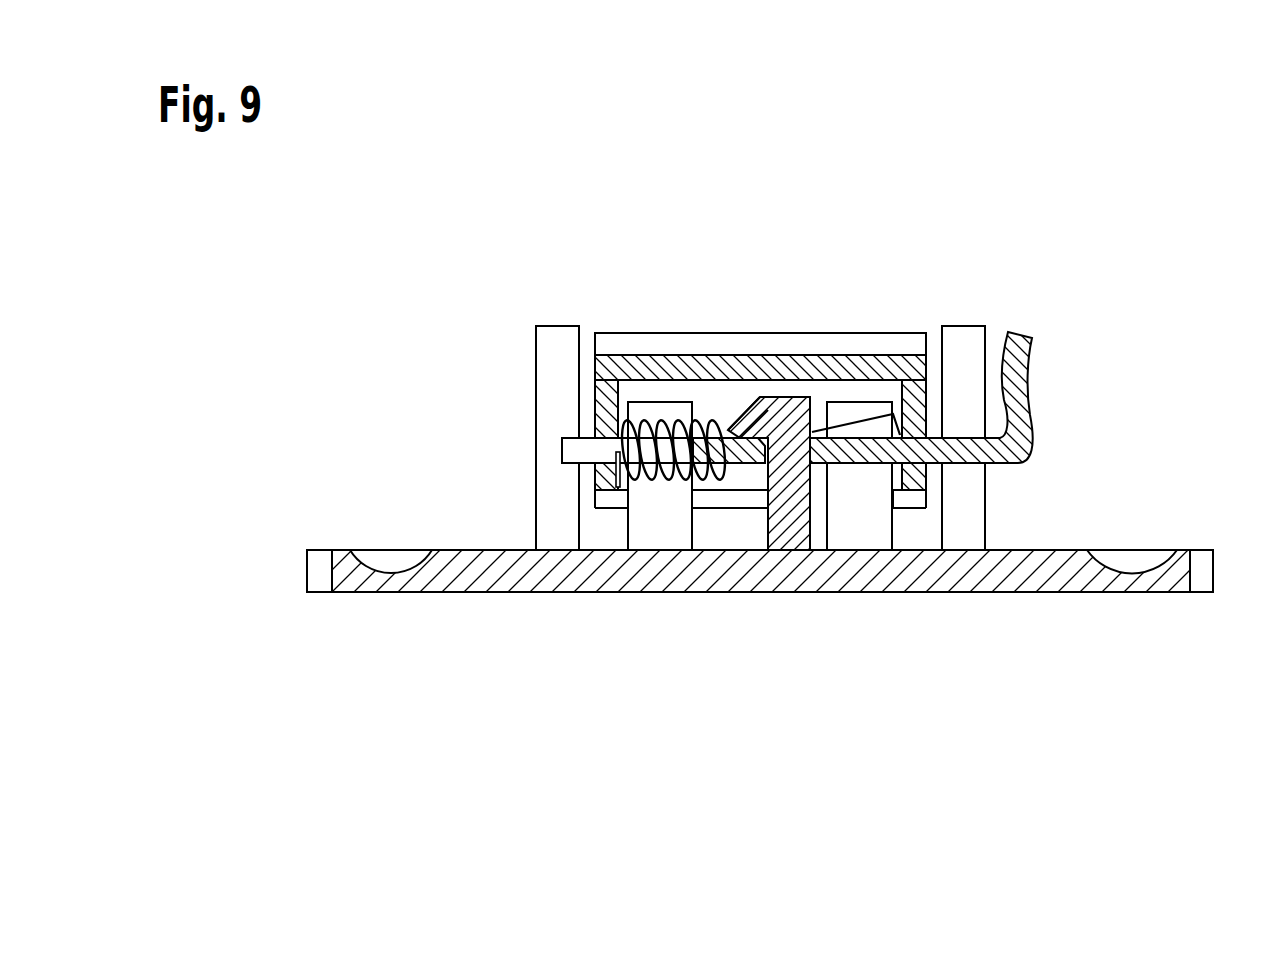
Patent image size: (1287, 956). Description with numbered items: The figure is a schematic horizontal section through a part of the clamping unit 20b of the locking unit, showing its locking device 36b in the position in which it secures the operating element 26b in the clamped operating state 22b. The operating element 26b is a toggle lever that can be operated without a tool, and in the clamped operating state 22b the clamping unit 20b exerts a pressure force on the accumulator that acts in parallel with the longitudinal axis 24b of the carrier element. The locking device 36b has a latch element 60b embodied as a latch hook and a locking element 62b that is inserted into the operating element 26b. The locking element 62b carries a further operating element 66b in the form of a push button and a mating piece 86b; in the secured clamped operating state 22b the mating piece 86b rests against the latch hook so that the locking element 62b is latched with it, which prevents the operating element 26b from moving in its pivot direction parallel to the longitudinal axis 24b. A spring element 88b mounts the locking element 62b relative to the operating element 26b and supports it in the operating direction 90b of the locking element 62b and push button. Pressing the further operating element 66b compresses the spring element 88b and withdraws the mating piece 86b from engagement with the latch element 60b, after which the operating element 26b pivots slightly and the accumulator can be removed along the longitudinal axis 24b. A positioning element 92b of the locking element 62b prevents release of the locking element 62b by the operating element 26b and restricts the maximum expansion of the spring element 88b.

The clamping unit 20b is at (1135, 437).
The clamped operating state 22b is at (1097, 302).
The longitudinal axis 24b is at (750, 205).
The operating element 26b is at (656, 368).
The locking device 36b is at (706, 407).
The latch element 60b is at (753, 411).
The locking element 62b is at (648, 550).
The further operating element 66b is at (1015, 385).
The mating piece 86b is at (735, 450).
The spring element 88b is at (650, 488).
The operating direction 90b is at (558, 452).
The positioning element 92b is at (868, 430).